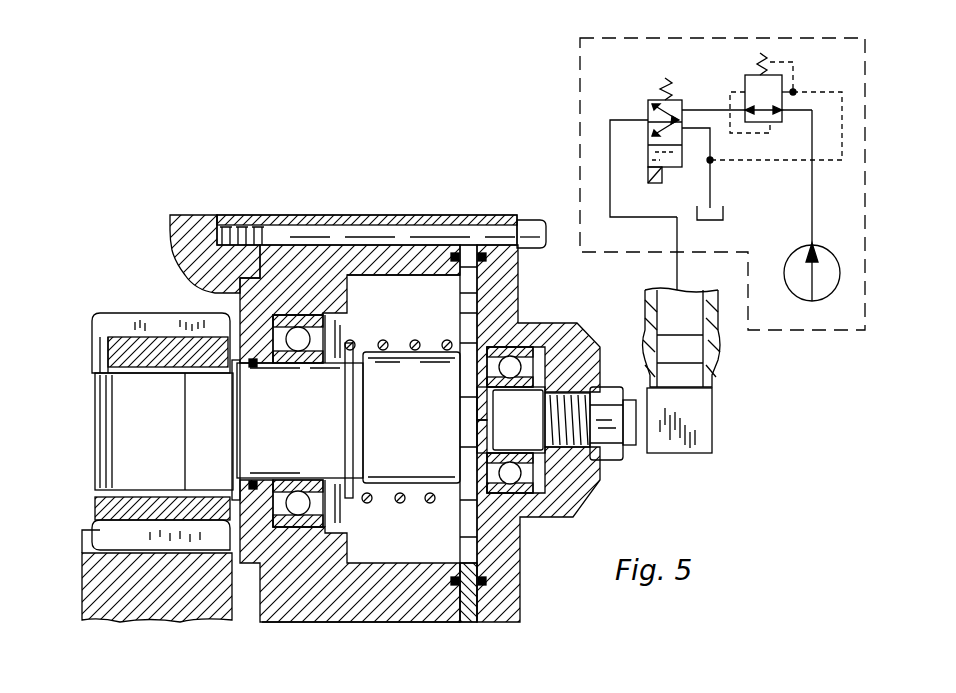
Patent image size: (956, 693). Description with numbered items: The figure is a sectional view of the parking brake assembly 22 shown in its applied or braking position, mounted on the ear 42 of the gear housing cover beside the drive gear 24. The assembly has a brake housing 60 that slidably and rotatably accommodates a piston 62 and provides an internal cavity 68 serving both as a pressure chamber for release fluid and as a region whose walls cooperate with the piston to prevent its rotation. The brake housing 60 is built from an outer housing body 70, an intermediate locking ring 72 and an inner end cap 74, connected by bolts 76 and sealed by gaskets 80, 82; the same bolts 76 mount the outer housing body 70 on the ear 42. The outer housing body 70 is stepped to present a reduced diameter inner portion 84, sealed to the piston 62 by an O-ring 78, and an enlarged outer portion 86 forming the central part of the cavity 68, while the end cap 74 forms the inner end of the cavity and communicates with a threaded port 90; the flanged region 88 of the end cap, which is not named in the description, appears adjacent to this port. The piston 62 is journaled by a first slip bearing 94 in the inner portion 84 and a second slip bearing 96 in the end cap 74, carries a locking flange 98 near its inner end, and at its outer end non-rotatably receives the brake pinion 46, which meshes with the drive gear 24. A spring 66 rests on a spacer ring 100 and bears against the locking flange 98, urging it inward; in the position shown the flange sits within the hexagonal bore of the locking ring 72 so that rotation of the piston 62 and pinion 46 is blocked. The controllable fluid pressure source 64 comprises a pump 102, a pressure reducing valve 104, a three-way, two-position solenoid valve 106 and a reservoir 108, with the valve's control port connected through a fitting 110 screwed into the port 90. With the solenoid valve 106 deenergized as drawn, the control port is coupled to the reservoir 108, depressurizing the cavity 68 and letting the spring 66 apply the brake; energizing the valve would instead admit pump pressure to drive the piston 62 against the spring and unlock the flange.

The parking brake assembly 22 is at (350, 168).
The drive gear 24 is at (103, 587).
The ear 42 is at (213, 215).
The brake pinion 46 is at (92, 347).
The brake housing 60 is at (429, 206).
The piston 62 is at (122, 415).
The controllable fluid pressure source 64 is at (848, 330).
The spring 66 is at (430, 503).
The internal cavity 68 is at (385, 308).
The outer housing body 70 is at (262, 600).
The intermediate locking ring 72 is at (470, 623).
The inner end cap 74 is at (512, 610).
The bolts 76 is at (531, 220).
The O-ring 78 is at (255, 368).
The gasket 80 is at (450, 593).
The gasket 82 is at (483, 580).
The reduced diameter inner portion 84 is at (265, 480).
The enlarged outer portion 86 is at (435, 276).
The end cap flange 88 is at (577, 332).
The threaded port 90 is at (567, 450).
The first slip bearing 94 is at (287, 315).
The second slip bearing 96 is at (515, 347).
The locking flange 98 is at (467, 345).
The spacer ring 100 is at (343, 505).
The pump 102 is at (800, 250).
The pressure reducing valve 104 is at (745, 80).
The three-way, two-position solenoid valve 106 is at (648, 108).
The reservoir 108 is at (723, 213).
The fitting 110 is at (703, 428).